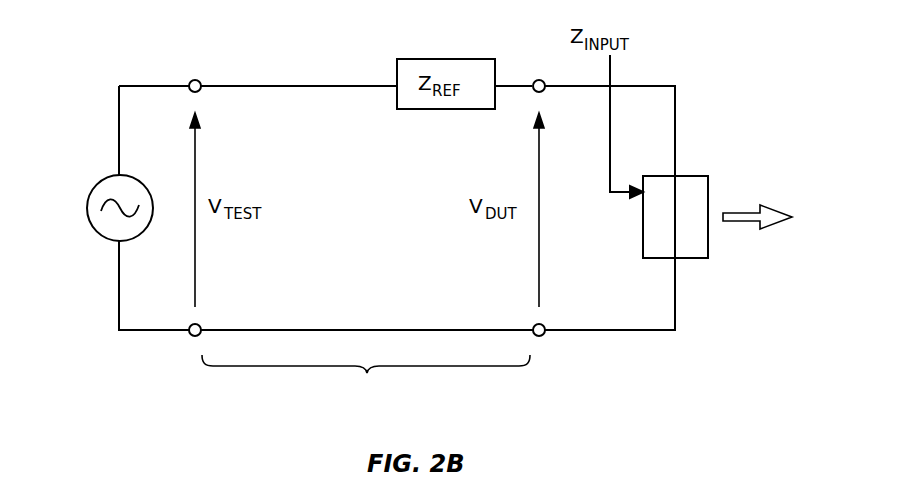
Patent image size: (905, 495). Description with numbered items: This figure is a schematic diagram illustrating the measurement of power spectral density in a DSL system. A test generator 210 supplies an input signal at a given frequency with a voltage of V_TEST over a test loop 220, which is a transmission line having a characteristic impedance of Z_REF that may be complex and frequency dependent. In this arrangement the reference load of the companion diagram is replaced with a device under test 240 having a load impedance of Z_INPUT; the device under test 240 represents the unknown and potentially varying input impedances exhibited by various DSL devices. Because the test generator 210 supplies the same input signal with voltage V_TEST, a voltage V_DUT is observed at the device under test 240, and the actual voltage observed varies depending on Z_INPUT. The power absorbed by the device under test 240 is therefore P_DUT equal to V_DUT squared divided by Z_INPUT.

The test generator 210 is at (102, 235).
The test loop 220 is at (366, 379).
The device under test (DUT) 240 is at (690, 258).